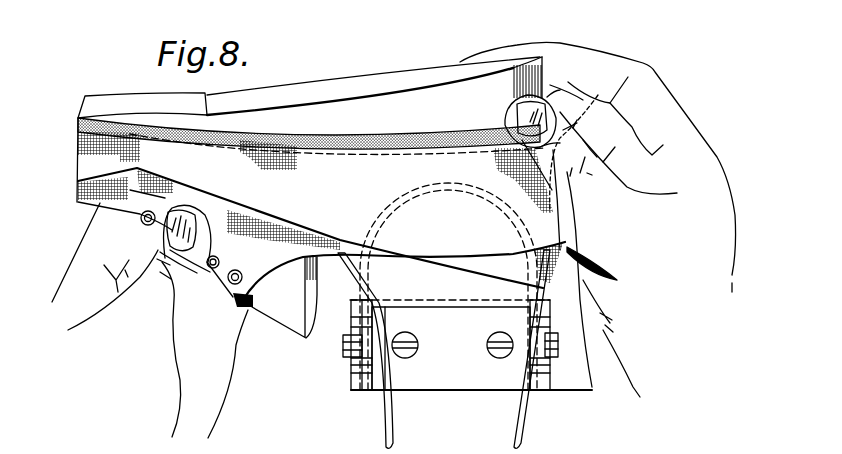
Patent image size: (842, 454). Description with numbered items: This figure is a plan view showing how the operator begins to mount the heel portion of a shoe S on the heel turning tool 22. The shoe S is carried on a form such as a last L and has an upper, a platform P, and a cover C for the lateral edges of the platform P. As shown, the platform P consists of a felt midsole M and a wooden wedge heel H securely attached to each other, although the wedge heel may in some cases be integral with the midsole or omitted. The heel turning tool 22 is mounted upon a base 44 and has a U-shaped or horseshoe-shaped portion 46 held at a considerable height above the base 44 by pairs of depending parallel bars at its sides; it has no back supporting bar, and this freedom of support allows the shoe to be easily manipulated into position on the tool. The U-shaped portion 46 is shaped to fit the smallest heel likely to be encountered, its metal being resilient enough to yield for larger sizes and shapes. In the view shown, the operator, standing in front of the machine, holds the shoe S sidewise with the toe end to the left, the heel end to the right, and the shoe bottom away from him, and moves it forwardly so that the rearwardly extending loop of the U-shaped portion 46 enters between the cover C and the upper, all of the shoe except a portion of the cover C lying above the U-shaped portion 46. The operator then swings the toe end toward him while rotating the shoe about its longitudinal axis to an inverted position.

The shoe S is at (493, 42).
The felt midsole M is at (97, 100).
The wooden wedge heel H is at (377, 100).
The platform P is at (307, 113).
The cover C is at (276, 218).
The last L is at (287, 322).
The heel turning tool 22 is at (356, 417).
The base 44 is at (458, 383).
The U-shaped portion 46 is at (519, 429).